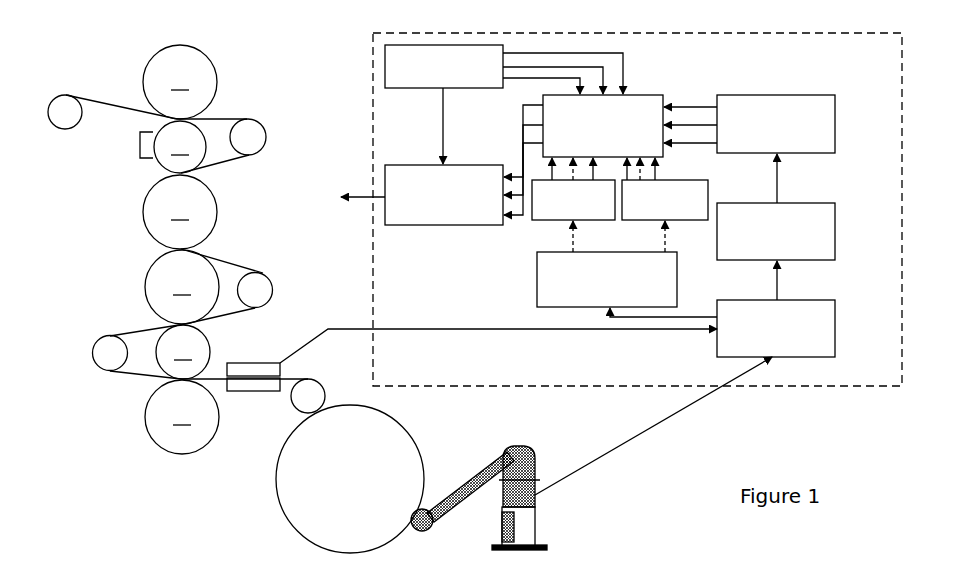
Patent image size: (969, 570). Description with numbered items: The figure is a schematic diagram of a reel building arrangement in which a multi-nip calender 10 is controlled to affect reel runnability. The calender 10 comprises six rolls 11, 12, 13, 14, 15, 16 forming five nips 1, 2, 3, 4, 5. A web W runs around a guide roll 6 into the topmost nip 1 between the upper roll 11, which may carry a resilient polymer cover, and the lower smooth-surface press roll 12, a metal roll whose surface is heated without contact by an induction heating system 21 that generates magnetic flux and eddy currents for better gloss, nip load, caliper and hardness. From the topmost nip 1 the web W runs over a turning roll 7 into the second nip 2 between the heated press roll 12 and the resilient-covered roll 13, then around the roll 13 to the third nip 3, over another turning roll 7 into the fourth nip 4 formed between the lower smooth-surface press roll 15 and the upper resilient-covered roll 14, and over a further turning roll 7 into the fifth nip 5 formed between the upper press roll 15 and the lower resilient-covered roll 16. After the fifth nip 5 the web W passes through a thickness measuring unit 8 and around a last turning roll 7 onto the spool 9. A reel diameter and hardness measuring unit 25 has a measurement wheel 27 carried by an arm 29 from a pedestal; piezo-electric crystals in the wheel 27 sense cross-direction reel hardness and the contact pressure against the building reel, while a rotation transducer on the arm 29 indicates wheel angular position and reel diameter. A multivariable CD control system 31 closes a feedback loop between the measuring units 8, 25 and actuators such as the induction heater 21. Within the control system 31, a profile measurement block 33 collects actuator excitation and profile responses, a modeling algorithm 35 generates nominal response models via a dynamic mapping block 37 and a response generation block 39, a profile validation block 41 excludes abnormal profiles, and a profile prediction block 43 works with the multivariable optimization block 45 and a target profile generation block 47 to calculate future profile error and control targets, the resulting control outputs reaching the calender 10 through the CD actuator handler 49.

The topmost nip 1 is at (206, 113).
The second calendering nip 2 is at (198, 174).
The third nip 3 is at (200, 248).
The fourth calendering nip 4 is at (200, 325).
The fifth calendering nip 5 is at (161, 382).
The guide roll 6 is at (66, 94).
The turning roll 7 is at (263, 121).
The thickness measuring unit 8 is at (236, 363).
The spool 9 is at (292, 492).
The multi-nip calender 10 is at (83, 228).
The upper roll 11 is at (180, 82).
The smooth-surface press roll 12 is at (180, 147).
The roll 13 is at (180, 212).
The roll 14 is at (182, 287).
The smooth-surface press roll 15 is at (183, 352).
The roll 16 is at (182, 417).
The induction heating system 21 is at (138, 147).
The reel diameter and hardness measuring unit 25 is at (506, 485).
The measurement wheel 27 is at (423, 507).
The arm 29 is at (484, 471).
The multivariable CD control system 31 is at (785, 386).
The profile measurement block 33 is at (836, 328).
The modeling algorithm 35 is at (678, 291).
The dynamic mapping block 37 is at (709, 197).
The response generation block 39 is at (555, 221).
The profile validation block 41 is at (836, 232).
The profile prediction block 43 is at (836, 123).
The multivariable optimization block 45 is at (643, 94).
The target profile generation block 47 is at (457, 88).
The CD actuator handler 49 is at (457, 164).
The web W is at (108, 102).